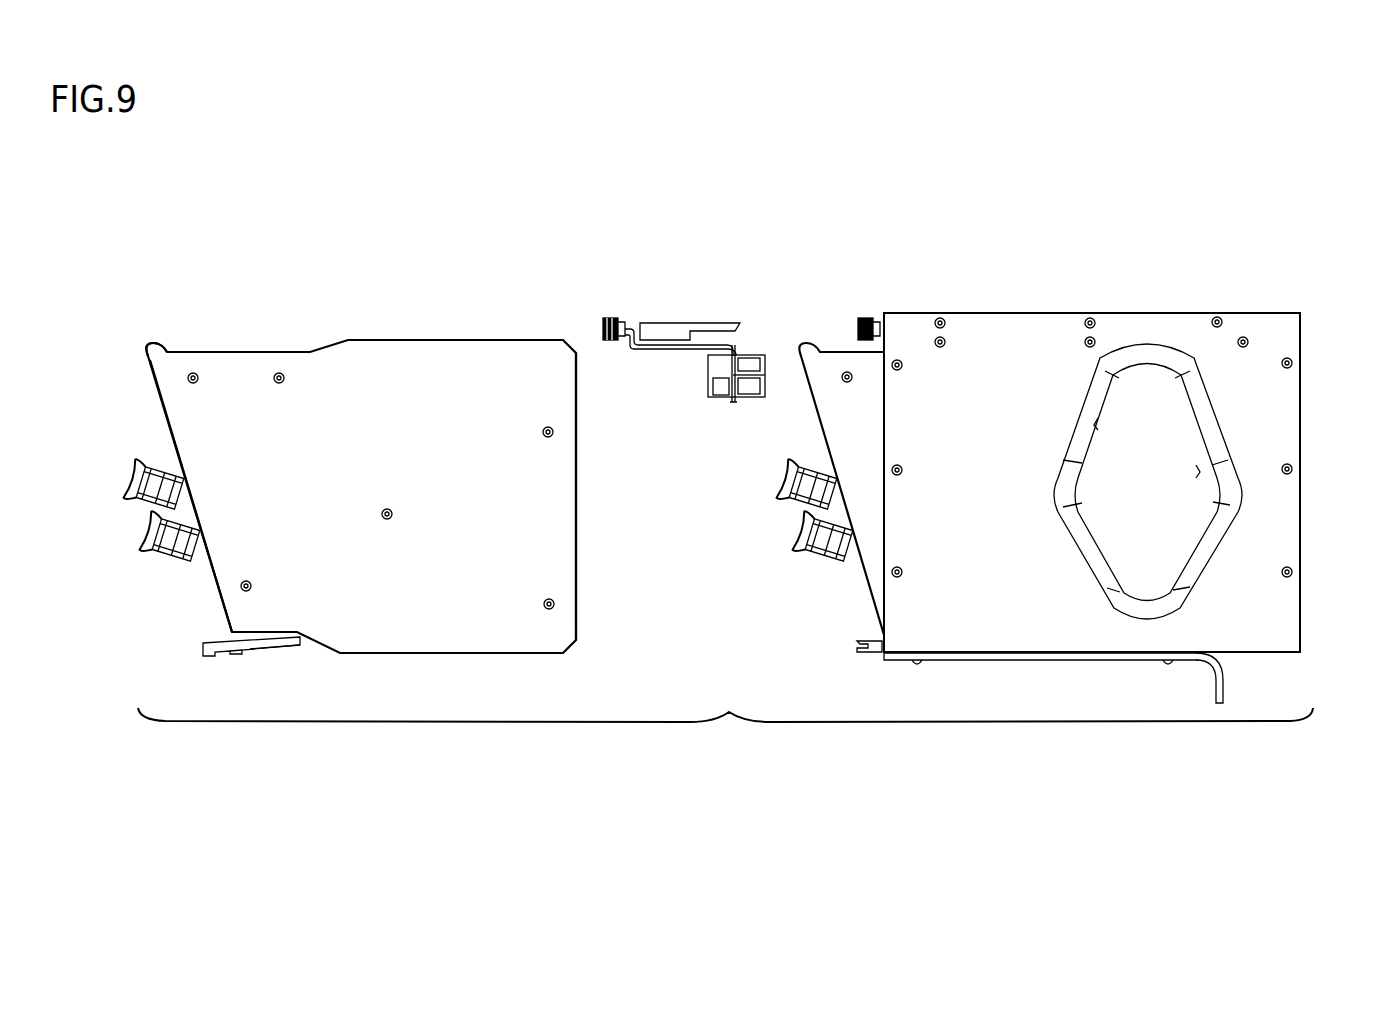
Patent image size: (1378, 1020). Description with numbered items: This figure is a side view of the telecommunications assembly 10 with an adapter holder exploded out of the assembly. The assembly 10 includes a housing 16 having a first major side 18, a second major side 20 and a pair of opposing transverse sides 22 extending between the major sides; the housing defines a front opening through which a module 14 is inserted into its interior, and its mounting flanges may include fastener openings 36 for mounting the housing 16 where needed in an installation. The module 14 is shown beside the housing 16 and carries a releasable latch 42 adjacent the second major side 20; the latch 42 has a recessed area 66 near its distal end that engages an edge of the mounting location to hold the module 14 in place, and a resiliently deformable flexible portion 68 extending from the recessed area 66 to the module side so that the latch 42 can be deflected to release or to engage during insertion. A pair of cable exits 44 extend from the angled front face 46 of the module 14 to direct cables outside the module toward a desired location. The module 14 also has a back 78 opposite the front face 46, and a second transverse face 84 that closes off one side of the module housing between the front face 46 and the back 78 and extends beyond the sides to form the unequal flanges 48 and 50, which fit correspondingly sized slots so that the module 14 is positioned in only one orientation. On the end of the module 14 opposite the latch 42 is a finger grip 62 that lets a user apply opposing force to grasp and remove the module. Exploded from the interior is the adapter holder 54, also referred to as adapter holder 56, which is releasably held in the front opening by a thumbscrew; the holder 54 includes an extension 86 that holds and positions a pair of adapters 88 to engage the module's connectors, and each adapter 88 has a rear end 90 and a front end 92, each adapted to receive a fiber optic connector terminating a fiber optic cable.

The telecommunications assembly 10 is at (730, 712).
The module 14 is at (303, 448).
The housing 16 is at (1022, 328).
The first major side 18 is at (1060, 313).
The second major side 20 is at (993, 660).
The transverse side 22 is at (982, 437).
The fastener opening 36 is at (1224, 690).
The latch 42 is at (203, 647).
The cable exit 44 is at (148, 547).
The front face 46 is at (163, 424).
The flange 48 is at (458, 352).
The flange 50 is at (407, 642).
The adapter holder 54 is at (668, 335).
The adapter holder 56 is at (613, 320).
The finger grip 62 is at (150, 342).
The recessed area 66 is at (234, 656).
The flexible portion 68 is at (283, 650).
The back 78 is at (580, 493).
The second transverse face 84 is at (452, 512).
The extension 86 is at (735, 350).
The adapter 88 is at (748, 360).
The rear end 90 is at (766, 390).
The front end 92 is at (712, 389).